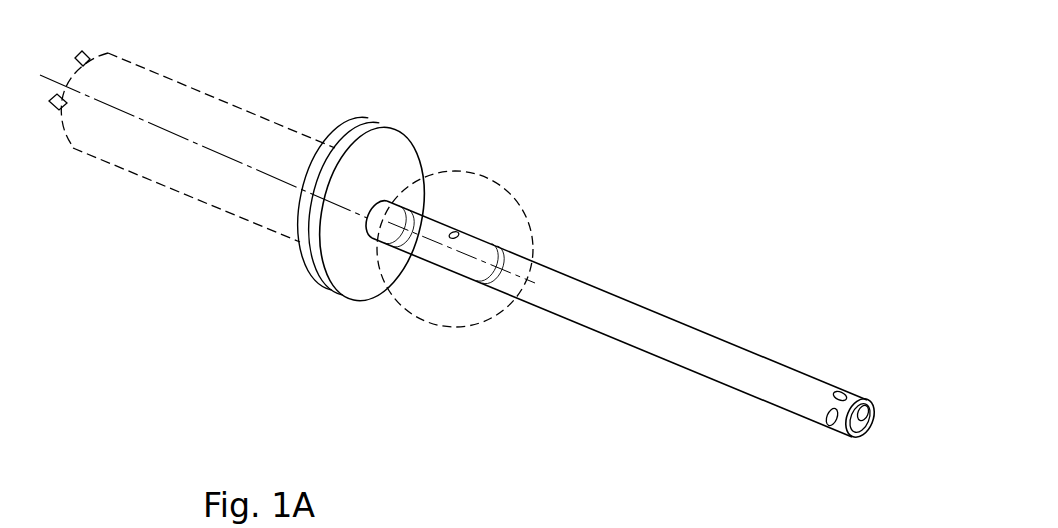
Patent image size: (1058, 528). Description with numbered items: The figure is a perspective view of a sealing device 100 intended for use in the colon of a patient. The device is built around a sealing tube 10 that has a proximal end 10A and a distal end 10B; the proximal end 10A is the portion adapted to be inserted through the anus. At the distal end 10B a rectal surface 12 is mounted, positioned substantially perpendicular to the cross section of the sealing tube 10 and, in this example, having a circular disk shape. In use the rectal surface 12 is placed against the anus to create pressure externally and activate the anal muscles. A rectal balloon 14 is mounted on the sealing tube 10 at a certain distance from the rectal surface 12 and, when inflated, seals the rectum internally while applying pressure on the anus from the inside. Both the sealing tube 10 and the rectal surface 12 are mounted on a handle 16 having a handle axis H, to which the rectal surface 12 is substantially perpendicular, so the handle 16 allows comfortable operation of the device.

The sealing device 100 is at (657, 155).
The sealing tube 10 is at (600, 320).
The proximal end 10A is at (838, 418).
The distal end 10B is at (388, 197).
The rectal surface 12 is at (348, 253).
The rectal balloon 14 is at (492, 318).
The handle 16 is at (253, 133).
The handle axis H is at (180, 132).